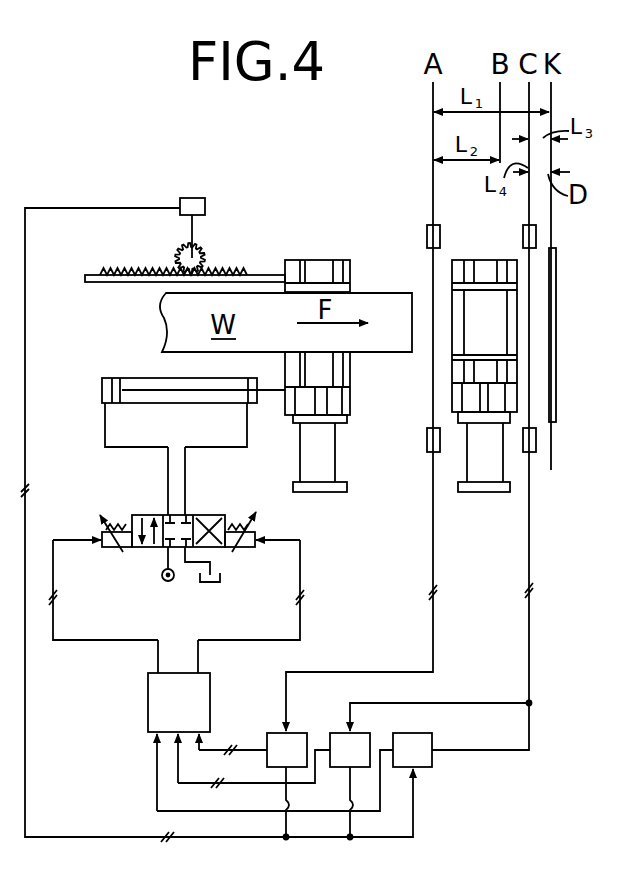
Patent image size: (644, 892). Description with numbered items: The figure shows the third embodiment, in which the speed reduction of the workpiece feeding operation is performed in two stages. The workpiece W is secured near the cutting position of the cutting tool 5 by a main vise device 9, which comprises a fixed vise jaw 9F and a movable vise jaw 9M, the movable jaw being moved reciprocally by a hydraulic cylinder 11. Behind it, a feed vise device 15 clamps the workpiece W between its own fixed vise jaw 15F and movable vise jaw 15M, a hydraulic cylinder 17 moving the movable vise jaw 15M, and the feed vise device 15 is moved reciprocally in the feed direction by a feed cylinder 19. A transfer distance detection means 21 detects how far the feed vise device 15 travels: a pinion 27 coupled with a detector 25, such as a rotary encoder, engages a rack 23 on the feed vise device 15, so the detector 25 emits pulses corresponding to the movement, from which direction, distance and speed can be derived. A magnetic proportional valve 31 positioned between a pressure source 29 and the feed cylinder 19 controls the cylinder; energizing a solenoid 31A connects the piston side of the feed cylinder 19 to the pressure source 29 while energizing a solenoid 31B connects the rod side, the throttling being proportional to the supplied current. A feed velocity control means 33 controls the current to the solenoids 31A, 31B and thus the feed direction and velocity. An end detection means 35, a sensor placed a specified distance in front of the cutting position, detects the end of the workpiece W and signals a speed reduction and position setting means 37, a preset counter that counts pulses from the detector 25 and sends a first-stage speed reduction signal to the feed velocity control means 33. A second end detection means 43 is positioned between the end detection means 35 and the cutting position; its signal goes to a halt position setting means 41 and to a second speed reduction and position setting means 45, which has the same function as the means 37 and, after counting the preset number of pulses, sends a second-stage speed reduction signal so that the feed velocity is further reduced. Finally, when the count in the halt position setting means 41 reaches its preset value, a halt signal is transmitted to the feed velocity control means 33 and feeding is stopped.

The cutting tool 5 is at (557, 291).
The main vise device 9 is at (538, 310).
The fixed vise jaw 9F is at (486, 267).
The movable vise jaw 9M is at (512, 370).
The hydraulic cylinder 11 is at (484, 493).
The feed vise device 15 is at (344, 302).
The fixed vise jaw 15F is at (321, 267).
The movable vise jaw 15M is at (348, 355).
The hydraulic cylinder 17 is at (328, 458).
The feed cylinder 19 is at (130, 377).
The transfer distance detection means 21 is at (198, 247).
The rack 23 is at (99, 272).
The detector 25 is at (182, 199).
The pinion 27 is at (176, 254).
The pressure source 29 is at (168, 582).
The magnetic proportional throttling directional switching valve 31 is at (185, 537).
The solenoid 31A is at (118, 549).
The solenoid 31B is at (238, 549).
The feed velocity control means 33 is at (192, 720).
The end detection means 35 is at (427, 233).
The speed reduction and position setting means 37 is at (272, 732).
The halt position setting means 41 is at (437, 769).
The second end detection means 43 is at (537, 237).
The second speed reduction and position setting means 45 is at (338, 732).